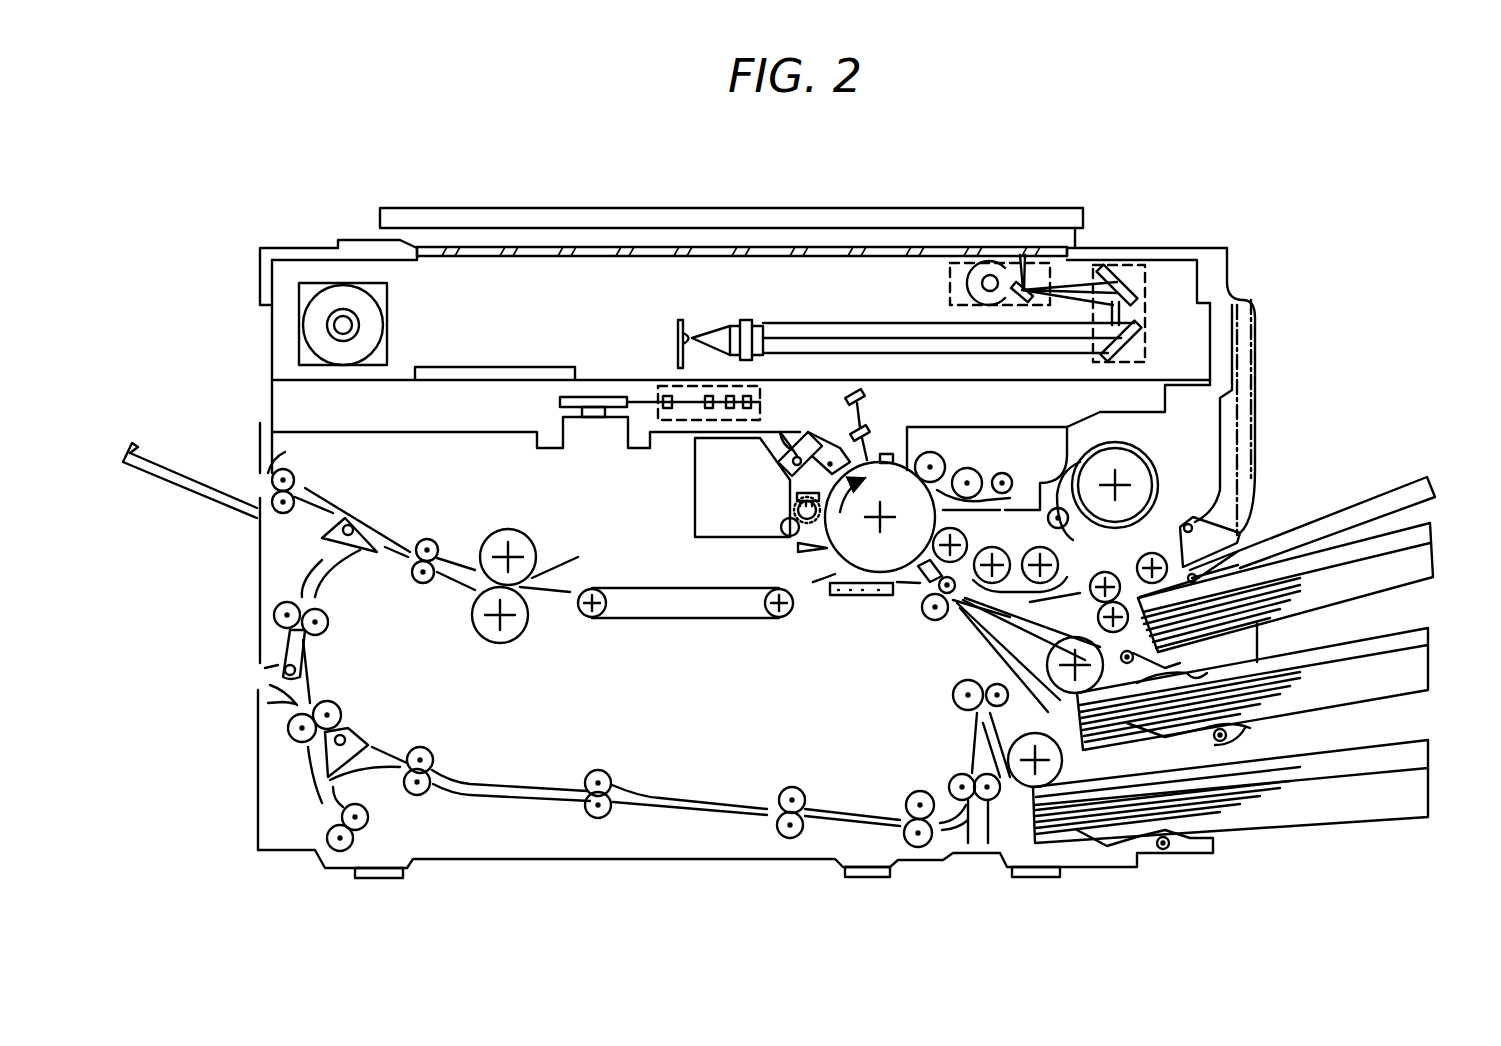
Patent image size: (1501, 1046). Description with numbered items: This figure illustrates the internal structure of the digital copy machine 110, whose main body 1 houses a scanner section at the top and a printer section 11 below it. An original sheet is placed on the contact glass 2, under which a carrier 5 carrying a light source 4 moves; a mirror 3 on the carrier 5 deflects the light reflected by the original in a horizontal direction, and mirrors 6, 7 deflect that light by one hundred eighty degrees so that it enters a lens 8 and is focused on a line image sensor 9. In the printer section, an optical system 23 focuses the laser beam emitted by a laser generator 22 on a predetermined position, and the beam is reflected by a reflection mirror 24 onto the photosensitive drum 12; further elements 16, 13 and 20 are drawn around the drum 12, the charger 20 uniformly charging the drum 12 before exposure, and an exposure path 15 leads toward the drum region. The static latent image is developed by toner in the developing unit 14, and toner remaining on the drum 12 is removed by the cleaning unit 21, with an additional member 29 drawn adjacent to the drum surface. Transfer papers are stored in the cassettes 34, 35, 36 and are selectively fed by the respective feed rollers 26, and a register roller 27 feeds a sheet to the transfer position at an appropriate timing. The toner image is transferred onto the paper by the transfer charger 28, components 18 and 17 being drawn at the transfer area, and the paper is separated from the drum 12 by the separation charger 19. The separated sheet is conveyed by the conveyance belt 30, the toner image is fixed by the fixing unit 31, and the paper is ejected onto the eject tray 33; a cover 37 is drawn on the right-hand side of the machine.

The copying machine main body 1 is at (1210, 292).
The contact glass 2 is at (492, 257).
The mirror 3 is at (1026, 297).
The light source 4 is at (975, 291).
The carrier 5 is at (950, 283).
The mirror 6 is at (1132, 284).
The mirror 7 is at (1140, 343).
The lens 8 is at (747, 320).
The line image sensor 9 is at (692, 336).
The image forming section 11 is at (588, 513).
The photosensitive drum 12 is at (902, 502).
The charger 13 is at (818, 444).
The developing unit 14 is at (1157, 450).
The exposure unit 15 is at (1004, 418).
The developing unit 16 is at (785, 425).
The separation roller 17 is at (920, 598).
The transfer charger 18 is at (876, 598).
The separation charger 19 is at (838, 598).
The charger 20 is at (887, 453).
The cleaning unit 21 is at (690, 535).
The laser generator 22 is at (560, 401).
The optical system 23 is at (660, 385).
The reflection mirror 24 is at (866, 400).
The feed rollers 26 is at (1095, 581).
The register roller 27 is at (934, 623).
The transfer charger 28 is at (966, 576).
The cleaning unit 29 is at (798, 550).
The conveyance belt 30 is at (683, 620).
The fixing unit 31 is at (498, 524).
The eject tray 33 is at (192, 497).
The cassette 34 is at (1420, 596).
The cassette 35 is at (1413, 706).
The cassette 36 is at (1368, 833).
The discharge tray cover 37 is at (1257, 382).
The digital copy machine 110 is at (466, 177).